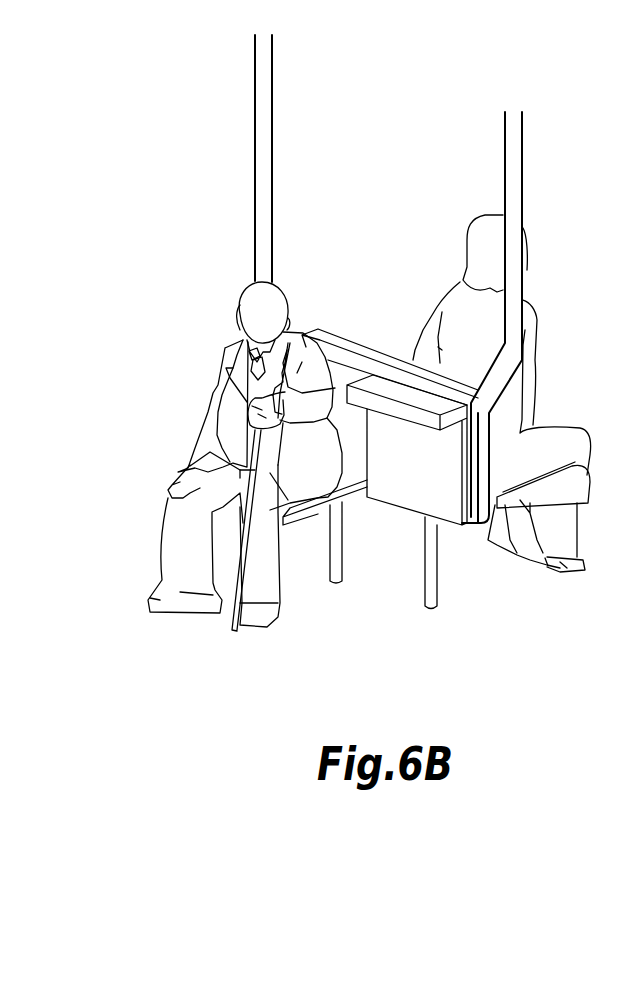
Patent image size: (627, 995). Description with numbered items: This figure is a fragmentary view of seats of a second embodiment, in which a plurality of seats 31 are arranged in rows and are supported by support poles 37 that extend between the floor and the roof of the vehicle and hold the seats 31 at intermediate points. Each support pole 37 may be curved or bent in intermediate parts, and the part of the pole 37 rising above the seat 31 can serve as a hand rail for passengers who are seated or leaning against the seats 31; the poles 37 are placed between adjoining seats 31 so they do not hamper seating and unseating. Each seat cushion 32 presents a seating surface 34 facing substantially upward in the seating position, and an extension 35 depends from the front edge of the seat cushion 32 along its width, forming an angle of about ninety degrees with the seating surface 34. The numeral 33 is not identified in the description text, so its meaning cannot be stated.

The seat 31 is at (446, 513).
The seat cushion 32 is at (528, 505).
The backrest bar 33 is at (493, 472).
The seating surface 34 is at (318, 515).
The extension 35 is at (417, 415).
The support pole 37 is at (265, 87).